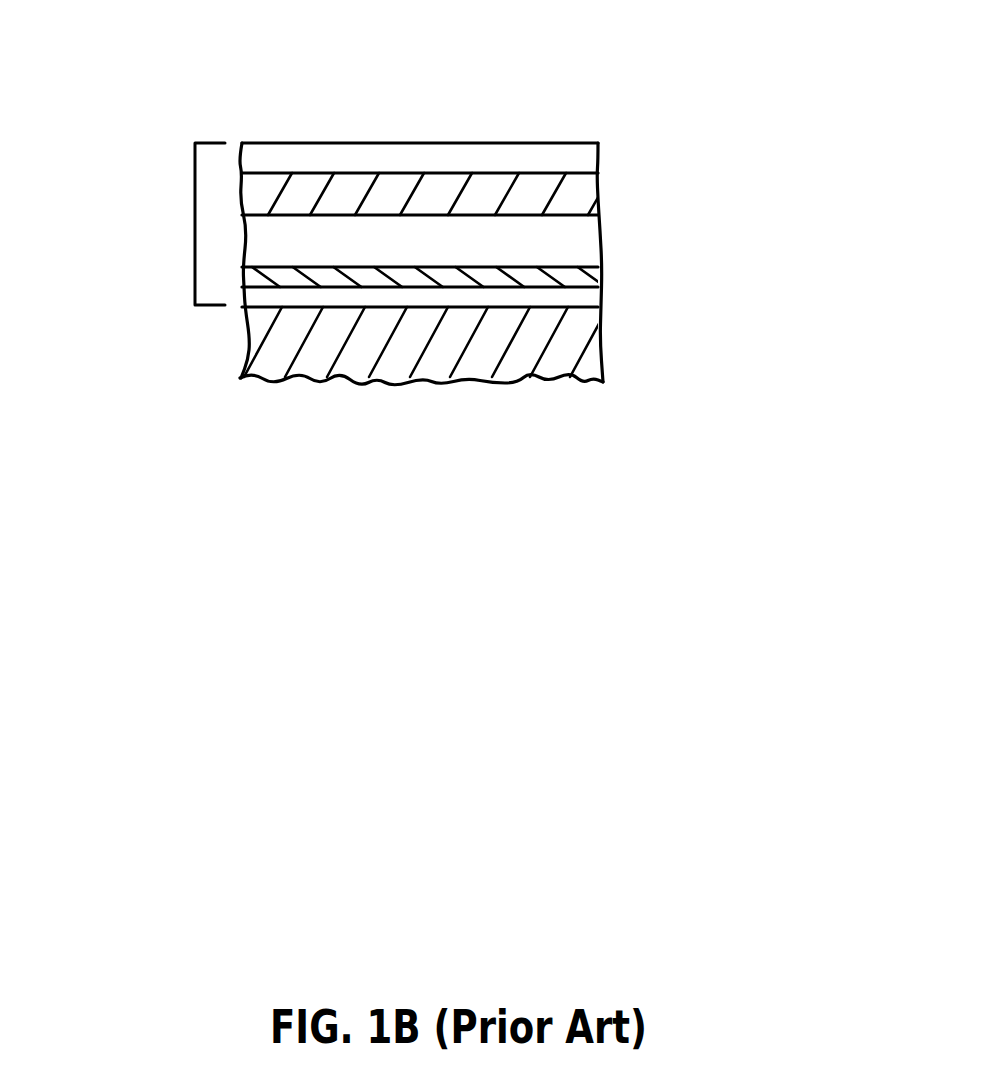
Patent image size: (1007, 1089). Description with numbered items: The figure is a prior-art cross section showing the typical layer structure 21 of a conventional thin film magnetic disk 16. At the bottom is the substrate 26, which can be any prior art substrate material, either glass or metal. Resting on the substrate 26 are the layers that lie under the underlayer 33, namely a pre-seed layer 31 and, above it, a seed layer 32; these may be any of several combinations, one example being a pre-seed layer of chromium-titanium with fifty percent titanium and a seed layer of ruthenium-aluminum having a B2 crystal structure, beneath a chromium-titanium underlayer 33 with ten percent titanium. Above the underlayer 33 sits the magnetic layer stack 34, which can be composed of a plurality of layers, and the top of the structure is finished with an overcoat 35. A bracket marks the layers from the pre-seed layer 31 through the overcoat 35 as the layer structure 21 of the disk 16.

The thin film magnetic disk 16 is at (312, 120).
The layer structure 21 is at (195, 222).
The substrate 26 is at (258, 327).
The pre-seed layer 31 is at (583, 293).
The seed layer 32 is at (598, 275).
The underlayer 33 is at (583, 245).
The magnetic layer stack 34 is at (585, 197).
The overcoat 35 is at (583, 152).